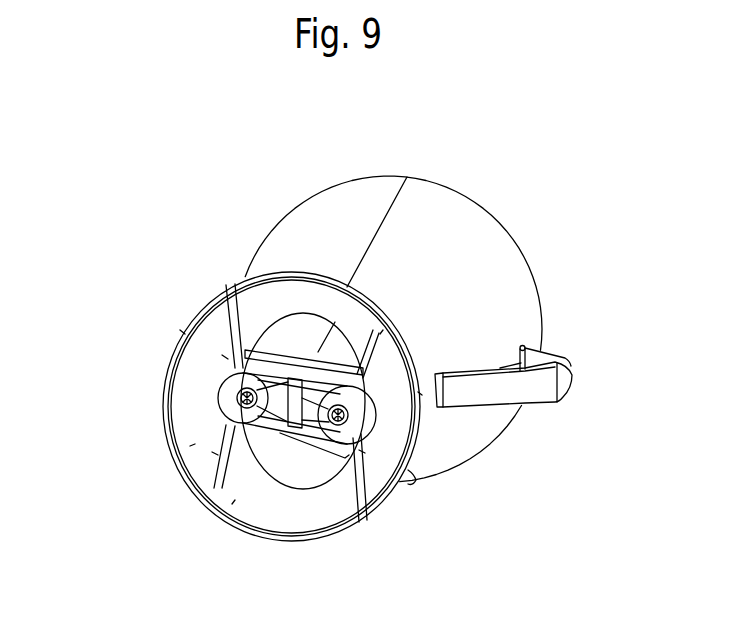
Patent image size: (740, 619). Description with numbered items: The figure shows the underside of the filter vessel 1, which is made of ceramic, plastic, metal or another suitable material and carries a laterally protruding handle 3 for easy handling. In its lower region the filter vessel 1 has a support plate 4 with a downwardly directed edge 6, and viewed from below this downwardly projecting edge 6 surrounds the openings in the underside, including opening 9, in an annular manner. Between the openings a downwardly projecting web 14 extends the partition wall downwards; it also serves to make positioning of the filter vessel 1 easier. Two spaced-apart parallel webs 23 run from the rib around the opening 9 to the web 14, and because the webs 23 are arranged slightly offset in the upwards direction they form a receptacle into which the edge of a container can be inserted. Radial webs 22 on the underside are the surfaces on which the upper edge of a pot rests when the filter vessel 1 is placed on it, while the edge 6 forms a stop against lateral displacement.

The filter vessel 1 is at (453, 222).
The handle 3 is at (535, 392).
The support plate 4 is at (383, 478).
The downwardly directed edge 6 is at (415, 477).
The opening 9 is at (232, 352).
The downwardly projecting web 14 is at (297, 428).
The radial webs 22 is at (215, 455).
The web 23 is at (277, 380).